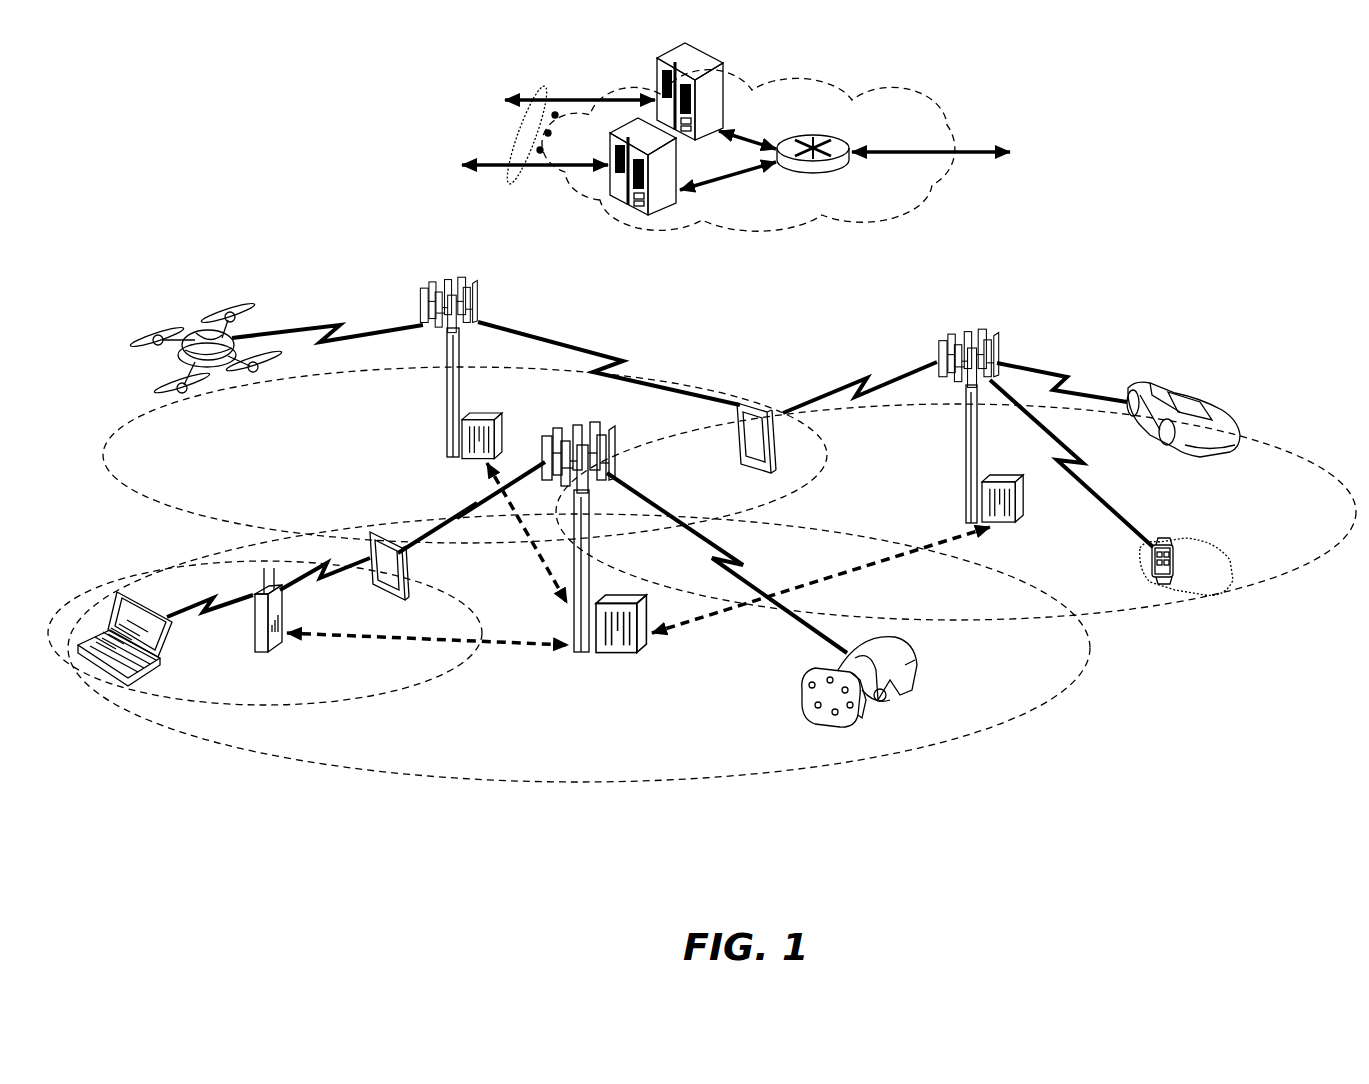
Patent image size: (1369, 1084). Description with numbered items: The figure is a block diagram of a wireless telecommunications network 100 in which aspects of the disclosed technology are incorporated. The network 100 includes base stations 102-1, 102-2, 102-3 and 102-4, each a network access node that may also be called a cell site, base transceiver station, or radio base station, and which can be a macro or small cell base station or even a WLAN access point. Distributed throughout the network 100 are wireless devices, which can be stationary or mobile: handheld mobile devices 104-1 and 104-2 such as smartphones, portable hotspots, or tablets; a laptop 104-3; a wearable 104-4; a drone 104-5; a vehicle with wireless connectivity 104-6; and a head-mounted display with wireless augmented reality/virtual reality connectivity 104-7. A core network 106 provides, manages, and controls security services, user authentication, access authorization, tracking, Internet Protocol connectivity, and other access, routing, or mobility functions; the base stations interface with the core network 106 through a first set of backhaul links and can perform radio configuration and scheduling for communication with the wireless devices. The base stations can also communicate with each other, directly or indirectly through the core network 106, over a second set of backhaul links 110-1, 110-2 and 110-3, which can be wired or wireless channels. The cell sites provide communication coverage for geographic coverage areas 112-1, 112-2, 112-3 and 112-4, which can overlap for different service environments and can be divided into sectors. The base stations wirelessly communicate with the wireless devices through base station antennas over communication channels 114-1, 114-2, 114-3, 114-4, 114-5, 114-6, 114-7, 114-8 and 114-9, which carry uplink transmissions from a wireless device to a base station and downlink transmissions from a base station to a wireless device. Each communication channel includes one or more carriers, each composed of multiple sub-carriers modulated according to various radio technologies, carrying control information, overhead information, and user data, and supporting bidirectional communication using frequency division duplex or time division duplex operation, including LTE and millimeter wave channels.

The wireless telecommunications network 100 is at (1254, 146).
The base station 102-1 is at (583, 654).
The base station 102-2 is at (445, 404).
The base station 102-3 is at (962, 440).
The base station 102-4 is at (254, 644).
The handheld mobile device 104-1 is at (405, 580).
The handheld mobile device 104-2 is at (738, 440).
The laptop 104-3 is at (102, 678).
The wearable 104-4 is at (1162, 542).
The drone 104-5 is at (215, 374).
The vehicle with wireless connectivity 104-6 is at (1203, 393).
The head-mounted display 104-7 is at (917, 663).
The core network 106 is at (848, 222).
The backhaul link 110-1 is at (324, 636).
The backhaul link 110-2 is at (888, 562).
The backhaul link 110-3 is at (542, 556).
The geographic coverage area 112-1 is at (507, 782).
The geographic coverage area 112-2 is at (388, 693).
The geographic coverage area 112-3 is at (165, 510).
The geographic coverage area 112-4 is at (1263, 440).
The communication channel 114-1 is at (745, 565).
The communication channel 114-2 is at (470, 512).
The communication channel 114-3 is at (183, 613).
The communication channel 114-4 is at (326, 580).
The communication channel 114-5 is at (336, 325).
The communication channel 114-6 is at (612, 364).
The communication channel 114-7 is at (858, 382).
The communication channel 114-8 is at (1090, 478).
The communication channel 114-9 is at (1062, 372).